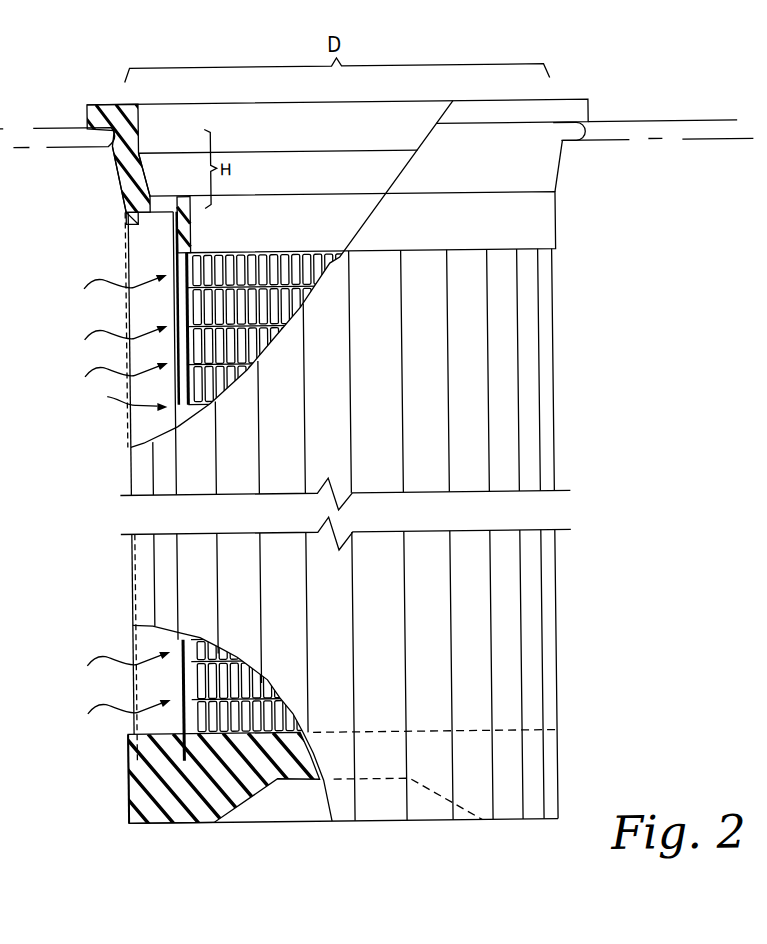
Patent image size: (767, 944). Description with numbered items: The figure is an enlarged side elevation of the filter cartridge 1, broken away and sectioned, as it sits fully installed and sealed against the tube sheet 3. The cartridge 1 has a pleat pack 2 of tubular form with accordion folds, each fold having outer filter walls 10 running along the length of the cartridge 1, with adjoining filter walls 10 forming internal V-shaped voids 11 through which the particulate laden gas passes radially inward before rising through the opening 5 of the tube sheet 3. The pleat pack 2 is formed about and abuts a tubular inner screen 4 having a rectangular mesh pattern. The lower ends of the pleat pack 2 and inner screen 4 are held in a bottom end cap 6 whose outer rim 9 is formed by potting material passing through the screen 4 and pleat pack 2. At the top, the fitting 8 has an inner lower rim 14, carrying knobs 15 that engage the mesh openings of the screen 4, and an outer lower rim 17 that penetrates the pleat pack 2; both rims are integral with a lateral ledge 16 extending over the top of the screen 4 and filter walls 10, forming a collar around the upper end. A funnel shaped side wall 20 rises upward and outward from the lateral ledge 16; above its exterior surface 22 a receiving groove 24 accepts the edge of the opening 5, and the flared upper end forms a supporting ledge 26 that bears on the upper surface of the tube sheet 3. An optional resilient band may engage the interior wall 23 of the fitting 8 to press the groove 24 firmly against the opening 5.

The filter cartridge 1 is at (587, 373).
The pleat pack 2 is at (560, 444).
The tube sheet 3 is at (658, 141).
The inner screen 4 is at (176, 349).
The opening 5 is at (579, 128).
The bottom end cap 6 is at (186, 811).
The top fitting 8 is at (563, 224).
The outer rim 9 is at (129, 758).
The filter walls 10 is at (147, 426).
The internal V-shaped voids 11 is at (108, 394).
The inner lower rim 14 is at (190, 240).
The knobs 15 is at (130, 245).
The lateral ledge 16 is at (126, 229).
The outer lower rim 17 is at (128, 215).
The funnel shaped side wall 20 is at (126, 171).
The exterior surface 22 is at (561, 182).
The interior wall 23 is at (144, 145).
The receiving groove 24 is at (148, 102).
The supporting ledge 26 is at (97, 102).